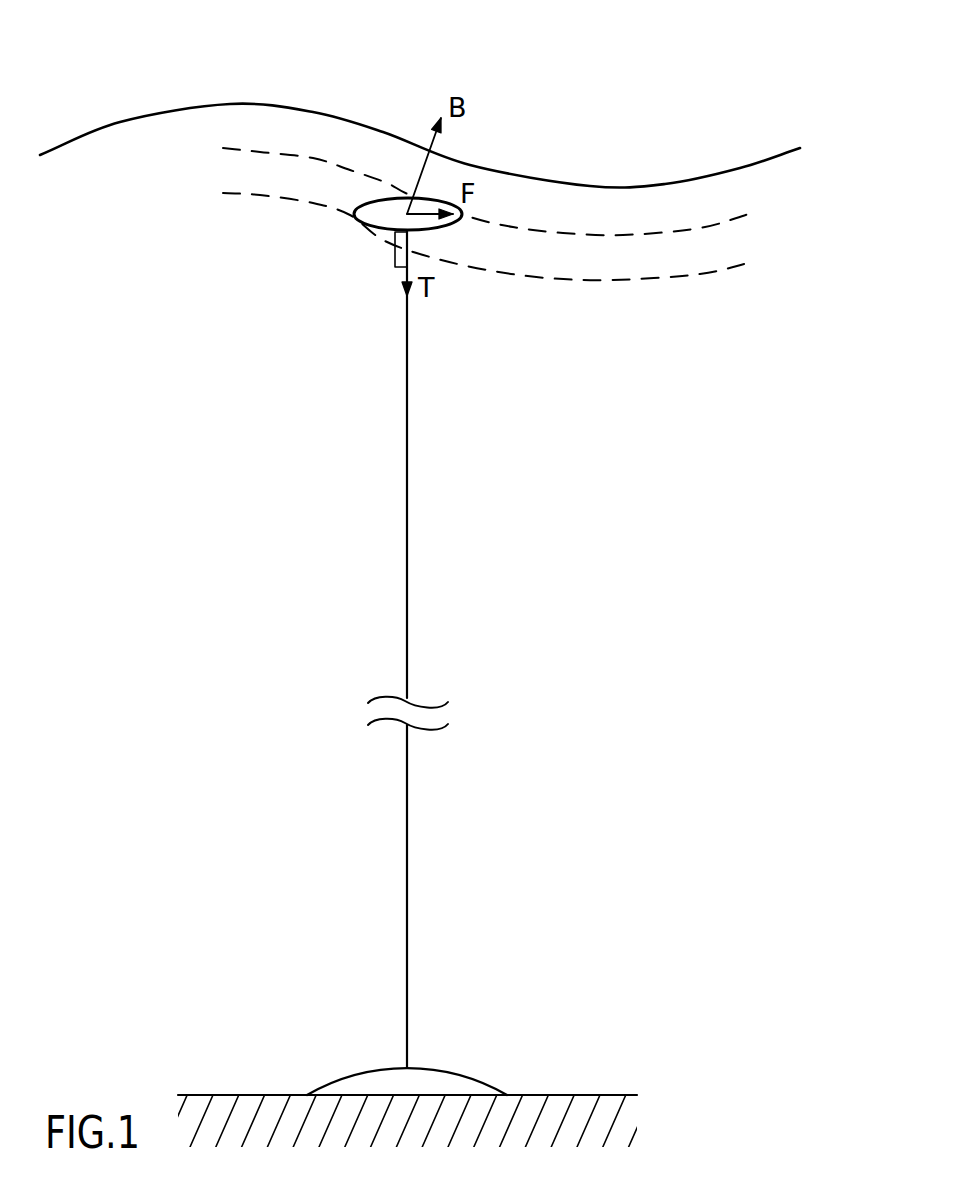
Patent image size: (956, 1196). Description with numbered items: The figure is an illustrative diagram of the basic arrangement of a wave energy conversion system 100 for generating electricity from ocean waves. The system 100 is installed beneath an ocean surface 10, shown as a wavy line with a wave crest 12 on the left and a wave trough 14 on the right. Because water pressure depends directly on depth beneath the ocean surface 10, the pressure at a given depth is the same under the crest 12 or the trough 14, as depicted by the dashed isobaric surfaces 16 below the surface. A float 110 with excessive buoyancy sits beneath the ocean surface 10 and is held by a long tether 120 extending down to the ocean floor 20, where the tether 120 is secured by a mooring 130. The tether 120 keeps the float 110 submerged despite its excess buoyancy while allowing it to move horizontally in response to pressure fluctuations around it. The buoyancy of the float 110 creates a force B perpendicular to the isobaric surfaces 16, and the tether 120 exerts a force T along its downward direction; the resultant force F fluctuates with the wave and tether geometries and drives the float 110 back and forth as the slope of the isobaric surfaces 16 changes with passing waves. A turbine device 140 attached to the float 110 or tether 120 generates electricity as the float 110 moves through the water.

The ocean surface 10 is at (384, 133).
The wave crest 12 is at (217, 105).
The wave trough 14 is at (665, 184).
The isobaric surfaces 16 is at (253, 193).
The ocean floor 20 is at (247, 1095).
The wave energy conversion system 100 is at (258, 665).
The float 110 is at (370, 202).
The tether 120 is at (408, 584).
The mooring 130 is at (475, 1073).
The turbine device 140 is at (395, 277).